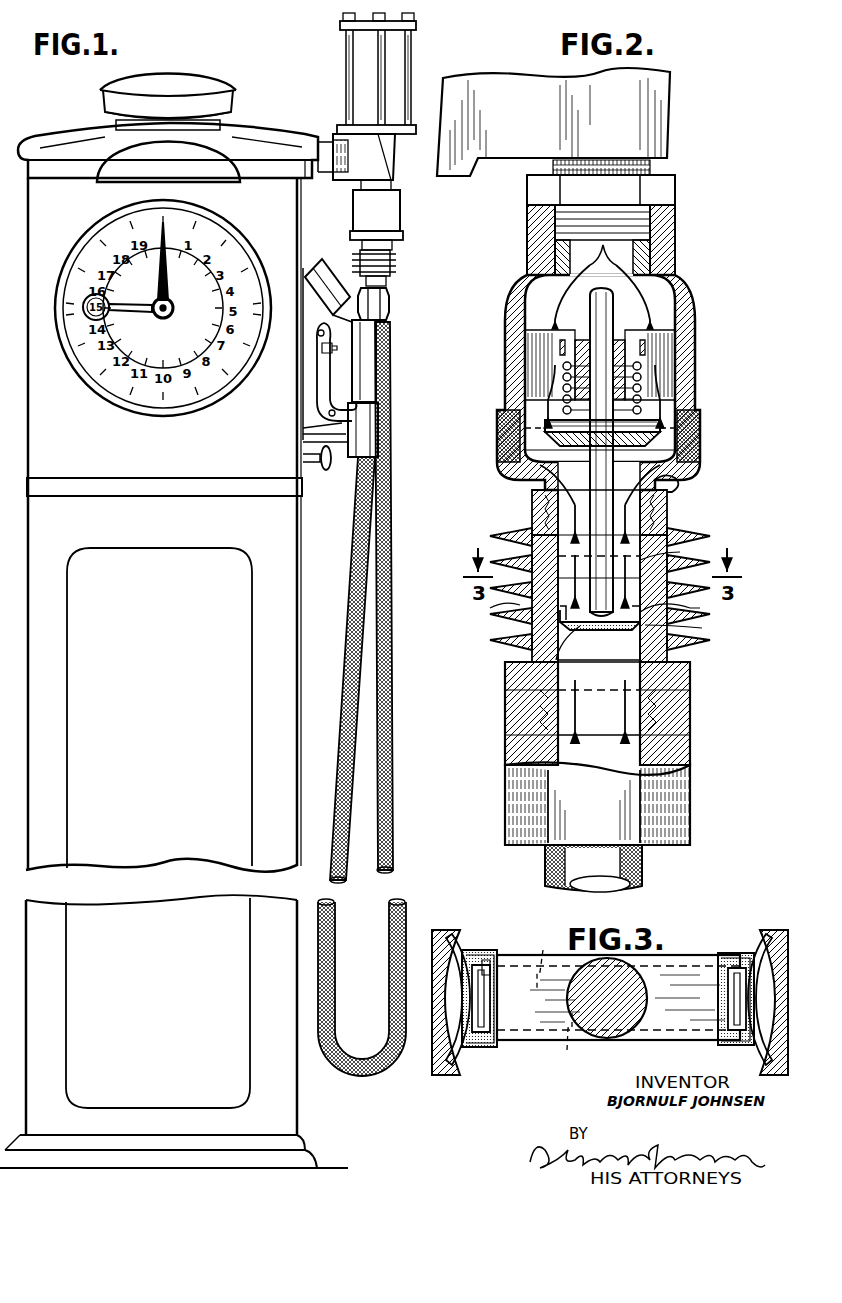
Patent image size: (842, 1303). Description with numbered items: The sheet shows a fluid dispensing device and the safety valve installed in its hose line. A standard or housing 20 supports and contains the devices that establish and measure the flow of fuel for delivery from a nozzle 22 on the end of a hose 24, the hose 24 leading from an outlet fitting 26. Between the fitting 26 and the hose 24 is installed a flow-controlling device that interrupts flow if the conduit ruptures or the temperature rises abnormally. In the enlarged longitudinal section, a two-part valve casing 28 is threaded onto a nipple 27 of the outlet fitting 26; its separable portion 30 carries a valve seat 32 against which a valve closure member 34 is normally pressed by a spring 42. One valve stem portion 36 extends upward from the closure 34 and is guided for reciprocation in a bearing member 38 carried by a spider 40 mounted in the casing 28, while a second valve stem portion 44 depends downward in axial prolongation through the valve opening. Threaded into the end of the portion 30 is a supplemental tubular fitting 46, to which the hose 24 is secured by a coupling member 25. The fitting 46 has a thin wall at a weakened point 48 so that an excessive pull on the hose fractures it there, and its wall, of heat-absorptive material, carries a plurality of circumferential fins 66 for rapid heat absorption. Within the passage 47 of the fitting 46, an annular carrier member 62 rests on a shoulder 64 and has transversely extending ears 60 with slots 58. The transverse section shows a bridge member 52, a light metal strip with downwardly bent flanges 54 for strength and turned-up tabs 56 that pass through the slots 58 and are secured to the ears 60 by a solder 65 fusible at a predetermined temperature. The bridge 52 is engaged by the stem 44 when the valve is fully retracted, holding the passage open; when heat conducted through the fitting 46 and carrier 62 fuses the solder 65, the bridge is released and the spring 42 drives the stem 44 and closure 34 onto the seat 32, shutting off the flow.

In FIG. 1, the standard or housing 20 is at (288, 583).
In FIG. 1, the nozzle 22 is at (335, 262).
In FIG. 1, the hose 24 is at (393, 583).
In FIG. 2, the hose 24 is at (642, 866).
In FIG. 1, the coupling member 25 is at (390, 312).
In FIG. 2, the coupling member 25 is at (675, 757).
In FIG. 1, the outlet fitting 26 is at (398, 168).
In FIG. 2, the outlet fitting 26 is at (667, 130).
In FIG. 2, the nipple 27 is at (655, 178).
In FIG. 1, the valve casing 28 is at (397, 218).
In FIG. 2, the valve casing 28 is at (694, 308).
In FIG. 2, the separable portion 30 is at (700, 465).
In FIG. 2, the valve seat 32 is at (672, 505).
In FIG. 2, the valve closure member 34 is at (662, 424).
In FIG. 2, the valve stem portion 36 is at (613, 322).
In FIG. 2, the bearing member 38 is at (528, 333).
In FIG. 2, the spider 40 is at (560, 378).
In FIG. 2, the spring 42 is at (565, 410).
In FIG. 2, the valve stem portion 44 is at (610, 516).
In FIG. 3, the valve stem portion 44 is at (600, 1025).
In FIG. 1, the supplemental tubular fitting 46 is at (398, 268).
In FIG. 2, the supplemental tubular fitting 46 is at (672, 650).
In FIG. 3, the supplemental tubular fitting 46 is at (438, 1075).
In FIG. 2, the passage 47 is at (568, 552).
In FIG. 2, the weakened point 48 is at (680, 552).
In FIG. 2, the bridge member 52 is at (610, 628).
In FIG. 3, the bridge member 52 is at (540, 1028).
In FIG. 2, the flanges 54 is at (535, 668).
In FIG. 3, the flanges 54 is at (558, 1002).
In FIG. 3, the tabs 56 is at (478, 1014).
In FIG. 3, the slots 58 is at (486, 990).
In FIG. 3, the ears 60 is at (485, 953).
In FIG. 2, the carrier member 62 is at (641, 609).
In FIG. 3, the carrier member 62 is at (462, 928).
In FIG. 2, the shoulder 64 is at (684, 629).
In FIG. 3, the fusible material 65 is at (490, 962).
In FIG. 2, the fins 66 is at (487, 613).